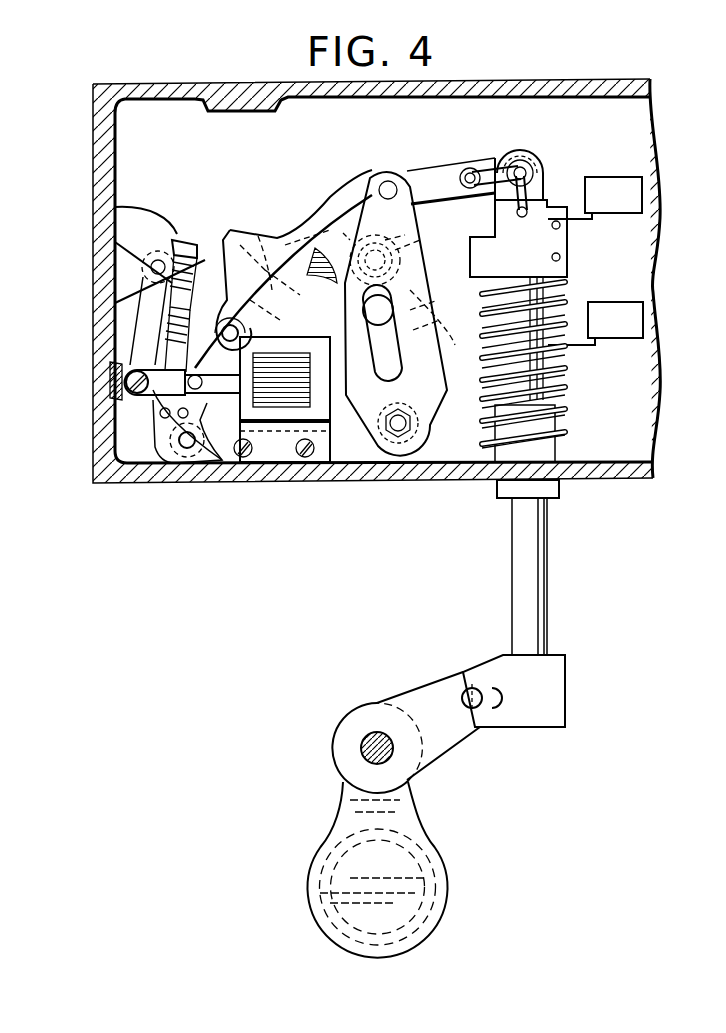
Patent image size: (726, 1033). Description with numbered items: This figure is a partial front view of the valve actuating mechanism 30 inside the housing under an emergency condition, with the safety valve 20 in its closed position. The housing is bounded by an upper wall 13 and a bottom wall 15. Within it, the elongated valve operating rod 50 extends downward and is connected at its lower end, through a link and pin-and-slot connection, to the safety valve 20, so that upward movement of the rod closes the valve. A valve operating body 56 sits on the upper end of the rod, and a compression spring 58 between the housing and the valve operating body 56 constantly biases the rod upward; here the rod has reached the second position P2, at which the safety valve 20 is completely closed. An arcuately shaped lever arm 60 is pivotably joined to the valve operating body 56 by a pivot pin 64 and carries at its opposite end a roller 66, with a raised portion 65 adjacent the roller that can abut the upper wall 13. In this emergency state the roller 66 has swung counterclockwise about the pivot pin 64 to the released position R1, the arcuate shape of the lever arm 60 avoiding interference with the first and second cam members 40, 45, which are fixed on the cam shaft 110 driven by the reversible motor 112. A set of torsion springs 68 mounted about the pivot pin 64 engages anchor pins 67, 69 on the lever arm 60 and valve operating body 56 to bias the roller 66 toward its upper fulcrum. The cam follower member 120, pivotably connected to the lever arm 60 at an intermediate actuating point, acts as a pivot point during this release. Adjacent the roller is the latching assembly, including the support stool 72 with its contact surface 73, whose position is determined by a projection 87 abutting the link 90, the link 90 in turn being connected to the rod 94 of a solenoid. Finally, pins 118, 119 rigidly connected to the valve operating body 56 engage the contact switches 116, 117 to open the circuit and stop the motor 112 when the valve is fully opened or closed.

The upper wall 13 is at (343, 103).
The bottom wall 15 is at (340, 458).
The safety valve 20 is at (430, 835).
The valve actuating mechanism 30 is at (406, 158).
The first cam member 40 is at (452, 247).
The second cam member 45 is at (428, 350).
The valve operating rod 50 is at (550, 562).
The valve operating body 56 is at (535, 270).
The compression spring 58 is at (572, 410).
The lever arm 60 is at (322, 188).
The pivot pin 64 is at (528, 168).
The raised portion 65 is at (258, 236).
The roller 66 is at (228, 324).
The anchor pin 67 is at (473, 170).
The torsion springs 68 is at (548, 185).
The anchor pin 69 is at (530, 210).
The support stool 72 is at (148, 282).
The contact surface 73 is at (118, 208).
The projection 87 is at (143, 300).
The link 90 is at (132, 343).
The rod 94 is at (202, 467).
The cam shaft 110 is at (343, 233).
The motor 112 is at (225, 218).
The contact switch 116 is at (595, 323).
The contact switch 117 is at (595, 198).
The pin 118 is at (560, 258).
The pin 119 is at (560, 226).
The cam follower member 120 is at (440, 440).
The second position P2 is at (520, 168).
The released position R1 is at (143, 395).